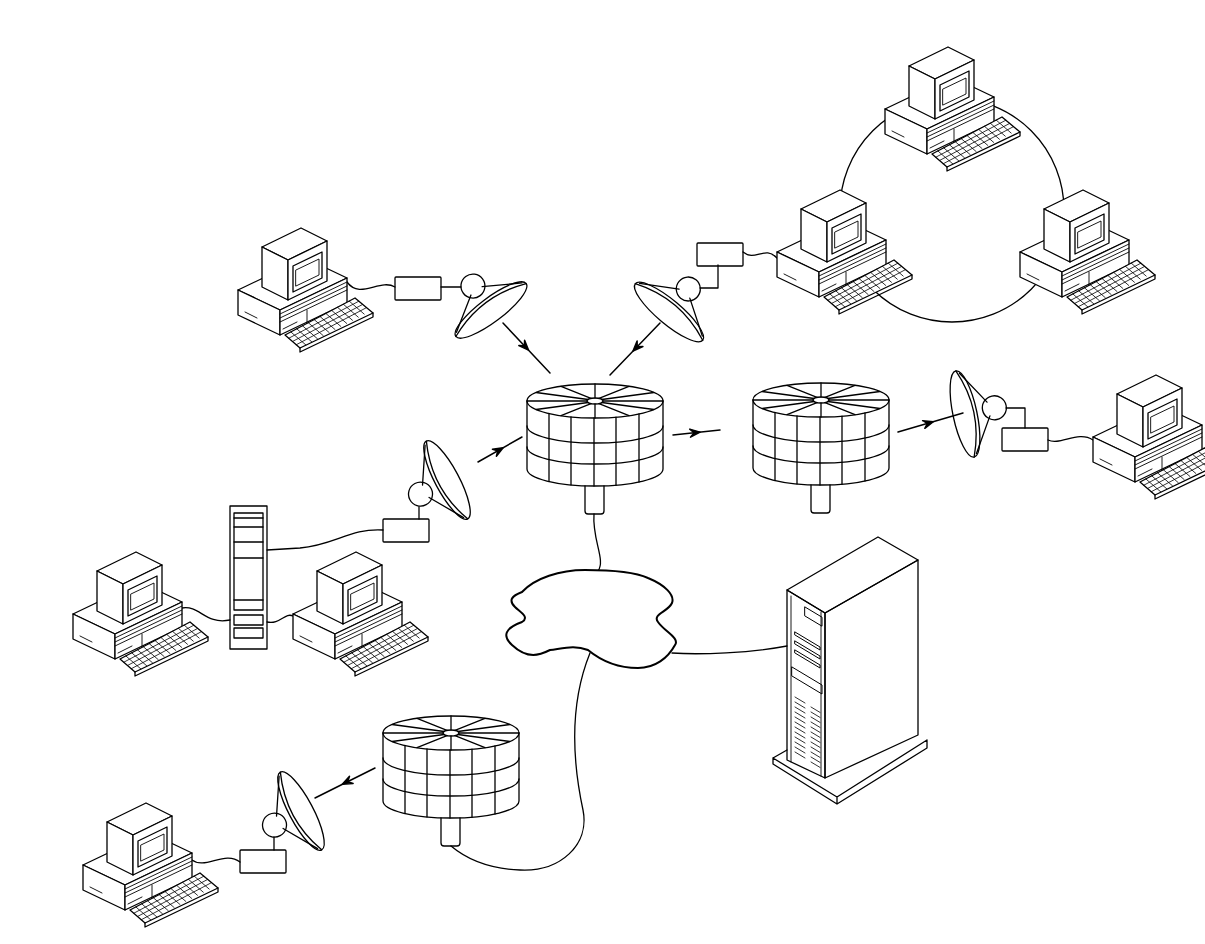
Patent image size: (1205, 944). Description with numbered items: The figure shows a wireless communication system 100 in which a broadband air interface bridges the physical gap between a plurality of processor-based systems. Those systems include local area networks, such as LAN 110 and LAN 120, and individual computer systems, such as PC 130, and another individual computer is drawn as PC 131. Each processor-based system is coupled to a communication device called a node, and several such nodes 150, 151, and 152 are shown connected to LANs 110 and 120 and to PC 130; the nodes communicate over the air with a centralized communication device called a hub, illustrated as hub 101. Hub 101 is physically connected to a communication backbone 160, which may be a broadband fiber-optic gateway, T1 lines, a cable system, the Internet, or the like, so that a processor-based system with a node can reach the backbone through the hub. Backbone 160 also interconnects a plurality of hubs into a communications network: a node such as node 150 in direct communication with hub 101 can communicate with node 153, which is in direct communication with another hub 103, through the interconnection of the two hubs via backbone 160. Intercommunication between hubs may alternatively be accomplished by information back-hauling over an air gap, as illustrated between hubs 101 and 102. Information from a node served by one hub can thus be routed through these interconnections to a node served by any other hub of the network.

The system 100 is at (498, 139).
The hub 101 is at (590, 398).
The hub 102 is at (848, 393).
The hub 103 is at (444, 723).
The LAN 110 is at (234, 492).
The LAN 120 is at (1061, 129).
The PC 130 is at (291, 245).
The client computer 131 is at (135, 820).
The node 150 is at (392, 485).
The node 151 is at (667, 265).
The node 152 is at (459, 277).
The node 153 is at (287, 778).
The backbone 160 is at (636, 665).